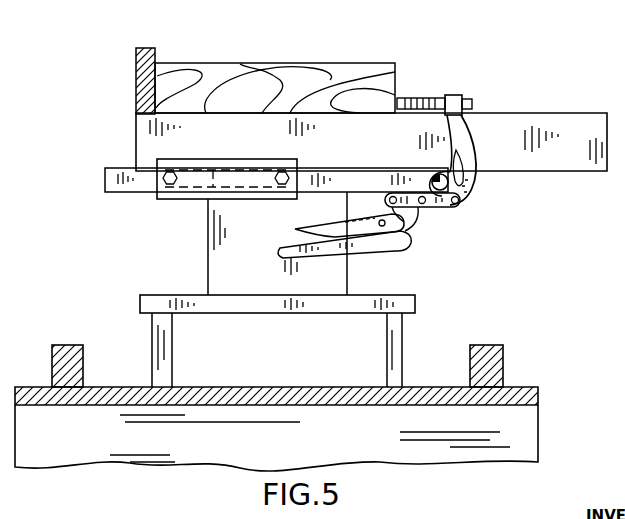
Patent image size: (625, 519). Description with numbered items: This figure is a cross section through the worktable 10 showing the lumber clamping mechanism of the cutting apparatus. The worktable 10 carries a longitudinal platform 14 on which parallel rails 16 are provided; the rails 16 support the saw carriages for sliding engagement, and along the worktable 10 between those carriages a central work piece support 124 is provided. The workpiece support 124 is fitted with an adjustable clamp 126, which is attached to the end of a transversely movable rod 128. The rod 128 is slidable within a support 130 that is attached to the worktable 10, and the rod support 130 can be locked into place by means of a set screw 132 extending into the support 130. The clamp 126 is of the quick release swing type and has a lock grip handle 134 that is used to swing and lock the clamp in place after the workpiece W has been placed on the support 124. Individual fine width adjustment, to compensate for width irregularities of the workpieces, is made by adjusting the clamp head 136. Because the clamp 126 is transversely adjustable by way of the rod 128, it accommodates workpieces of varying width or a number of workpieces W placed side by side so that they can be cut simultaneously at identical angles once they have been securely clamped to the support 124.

The workpiece W is at (247, 70).
The worktable 10 is at (50, 283).
The platform 14 is at (166, 295).
The rails 16 is at (80, 338).
The central work piece support 124 is at (568, 123).
The adjustable clamp 126 is at (481, 197).
The transversely movable rod 128 is at (134, 186).
The rod support 130 is at (248, 200).
The set screw 132 is at (170, 199).
The lock grip handle 134 is at (420, 244).
The clamp head 136 is at (397, 98).